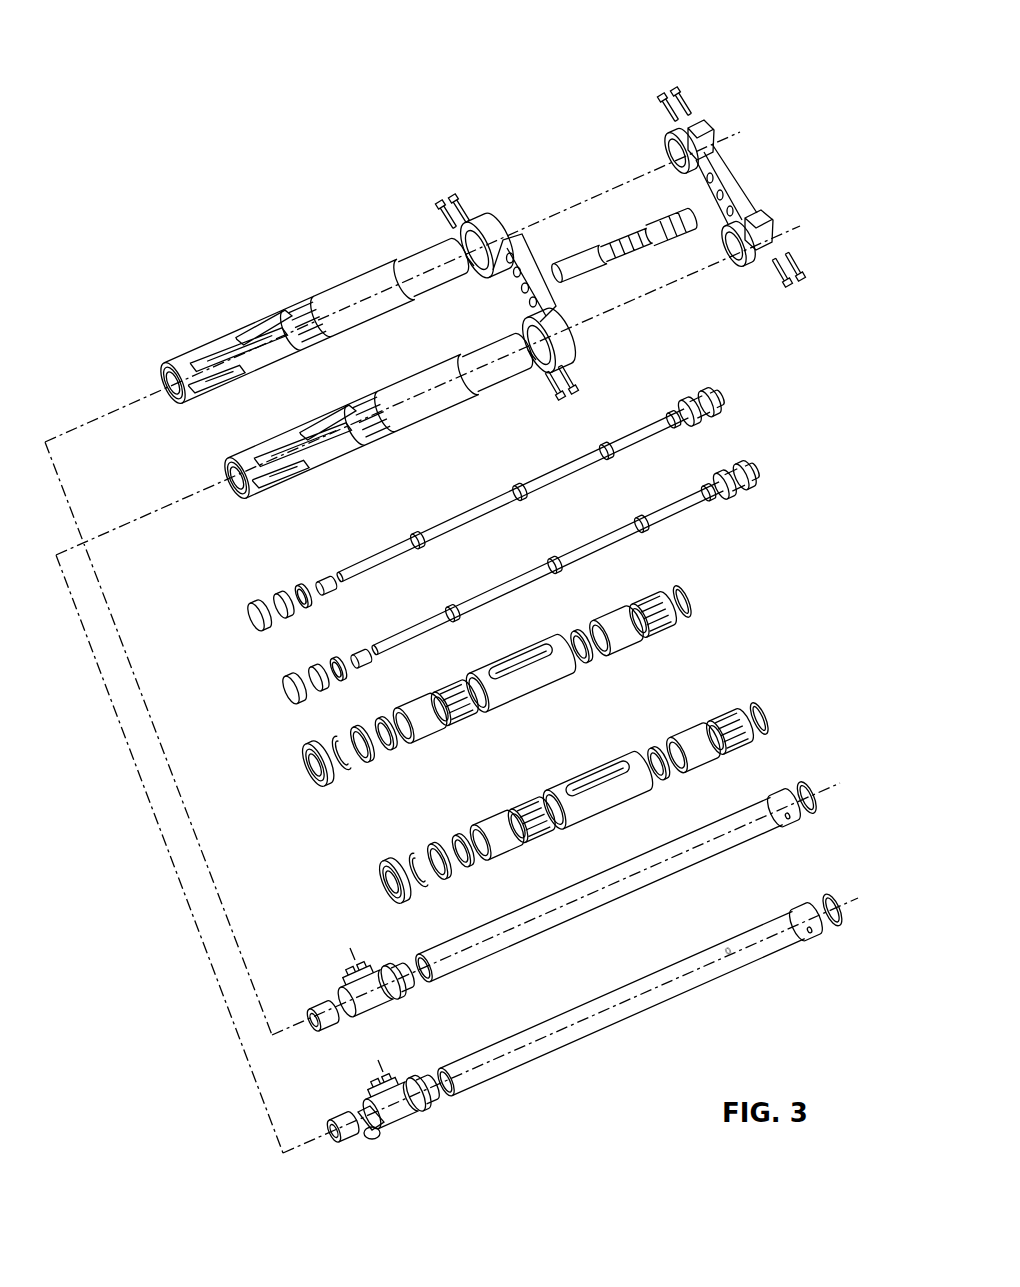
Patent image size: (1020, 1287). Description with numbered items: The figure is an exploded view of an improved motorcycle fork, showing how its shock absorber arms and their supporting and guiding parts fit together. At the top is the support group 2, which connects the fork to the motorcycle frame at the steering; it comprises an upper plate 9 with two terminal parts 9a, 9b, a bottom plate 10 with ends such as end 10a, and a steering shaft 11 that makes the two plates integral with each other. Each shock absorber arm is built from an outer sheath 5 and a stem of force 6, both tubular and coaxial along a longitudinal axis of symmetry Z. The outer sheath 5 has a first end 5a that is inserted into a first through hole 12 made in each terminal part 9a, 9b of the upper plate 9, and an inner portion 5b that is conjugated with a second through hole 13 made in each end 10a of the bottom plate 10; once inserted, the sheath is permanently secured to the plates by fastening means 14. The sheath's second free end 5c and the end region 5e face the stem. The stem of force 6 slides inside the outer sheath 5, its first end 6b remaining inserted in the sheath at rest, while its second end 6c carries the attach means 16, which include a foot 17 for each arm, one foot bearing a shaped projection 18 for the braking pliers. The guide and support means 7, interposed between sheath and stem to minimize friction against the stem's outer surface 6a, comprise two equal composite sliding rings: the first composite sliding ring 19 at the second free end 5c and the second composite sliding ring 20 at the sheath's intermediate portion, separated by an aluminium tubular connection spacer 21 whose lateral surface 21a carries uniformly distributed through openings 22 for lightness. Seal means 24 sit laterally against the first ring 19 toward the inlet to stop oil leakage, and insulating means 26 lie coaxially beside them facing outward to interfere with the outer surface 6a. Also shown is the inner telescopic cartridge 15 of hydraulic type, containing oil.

The support group 2 is at (736, 194).
The outer sheath 5 is at (309, 344).
The first end 5a is at (412, 246).
The inner portion 5b is at (303, 290).
The second free end 5c is at (162, 352).
The open end 5e is at (150, 388).
The stem of force 6 is at (620, 960).
The outer surface 6a is at (683, 987).
The first end 6b is at (798, 958).
The second end 6c is at (473, 1102).
The guide and support means 7 is at (705, 604).
The upper plate 9 is at (715, 170).
The terminal part 9a is at (722, 147).
The terminal part 9b is at (780, 226).
The bottom plate 10 is at (518, 268).
The end 10a is at (490, 226).
The steering shaft 11 is at (692, 218).
The first through hole 12 is at (670, 155).
The second through hole 13 is at (471, 263).
The fastening means 14 is at (665, 84).
The inner telescopic cartridge 15 is at (742, 412).
The attach means 16 is at (362, 1022).
The foot 17 is at (352, 982).
The shaped projection 18 is at (366, 1122).
The first composite sliding ring 19 is at (426, 750).
The second composite sliding ring 20 is at (632, 665).
The tubular connection spacer 21 is at (556, 752).
The lateral surface 21a is at (520, 700).
The through openings 22 is at (527, 670).
The seal means 24 is at (372, 780).
The insulating means 26 is at (300, 740).
The longitudinal axis of symmetry Z is at (837, 788).